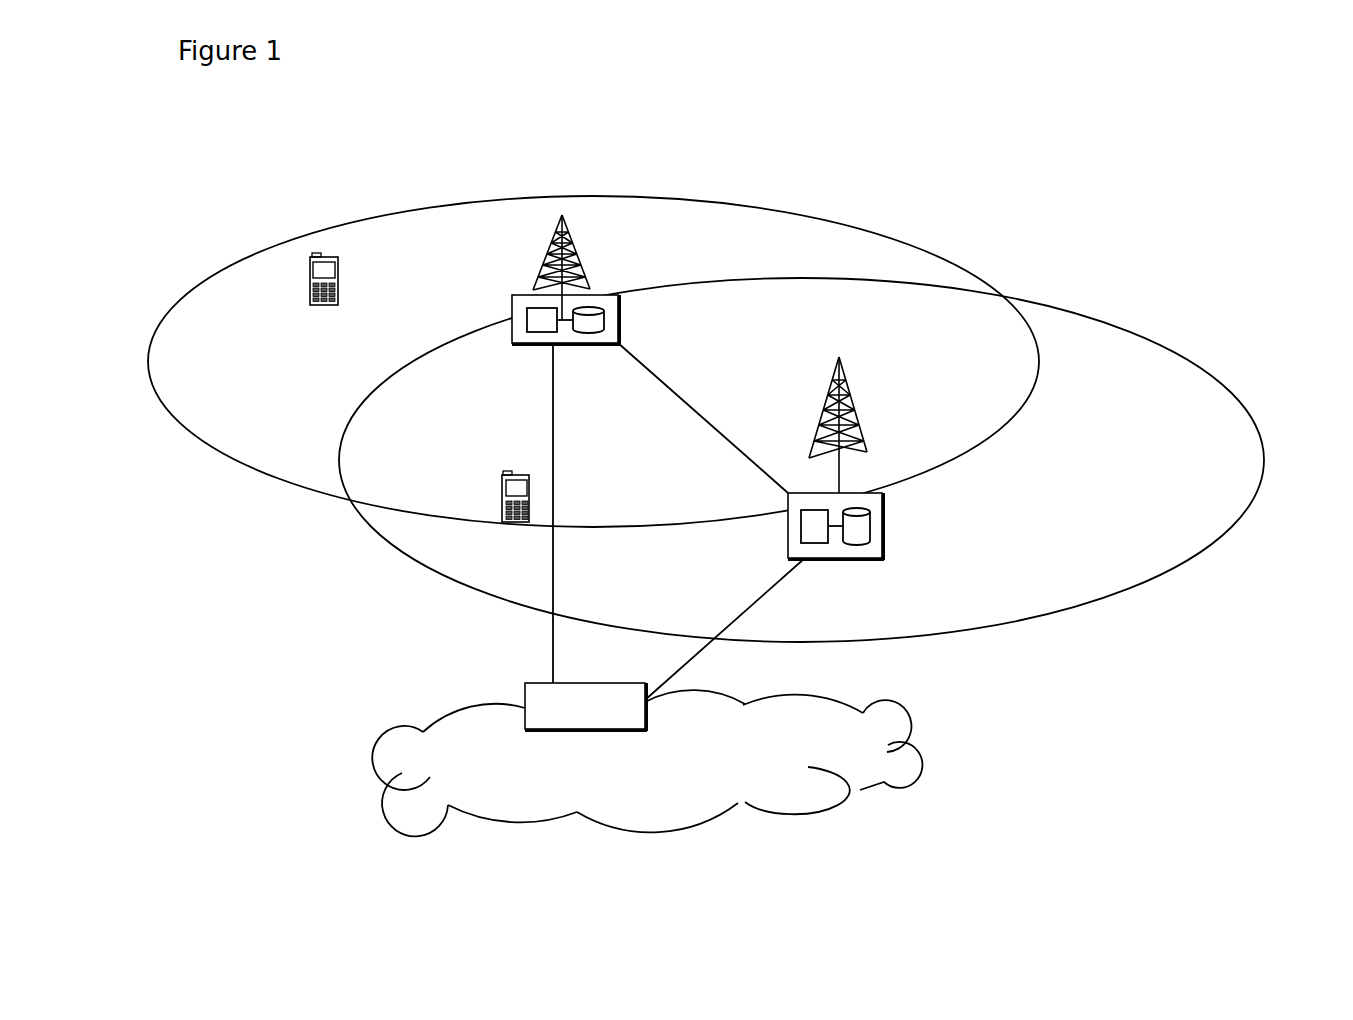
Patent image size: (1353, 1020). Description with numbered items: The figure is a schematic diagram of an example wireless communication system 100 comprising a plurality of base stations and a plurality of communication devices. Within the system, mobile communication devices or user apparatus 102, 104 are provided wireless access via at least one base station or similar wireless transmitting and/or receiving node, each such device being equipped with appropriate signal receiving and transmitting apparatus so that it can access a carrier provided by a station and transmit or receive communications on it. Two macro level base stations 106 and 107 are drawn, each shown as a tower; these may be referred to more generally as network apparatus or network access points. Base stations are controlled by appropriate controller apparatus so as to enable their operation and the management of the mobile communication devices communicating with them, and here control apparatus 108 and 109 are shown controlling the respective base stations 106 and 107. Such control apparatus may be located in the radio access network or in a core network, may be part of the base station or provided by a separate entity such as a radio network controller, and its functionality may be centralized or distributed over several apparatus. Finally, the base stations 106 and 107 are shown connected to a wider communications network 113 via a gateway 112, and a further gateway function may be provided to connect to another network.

The wireless communication system 100 is at (236, 240).
The mobile communication device 102 is at (308, 292).
The mobile communication device 104 is at (502, 502).
The macro level base station 106 is at (548, 273).
The macro level base station 107 is at (860, 427).
The control apparatus 108 is at (510, 308).
The control apparatus 109 is at (873, 550).
The gateway 112 is at (527, 683).
The communications network 113 is at (452, 738).